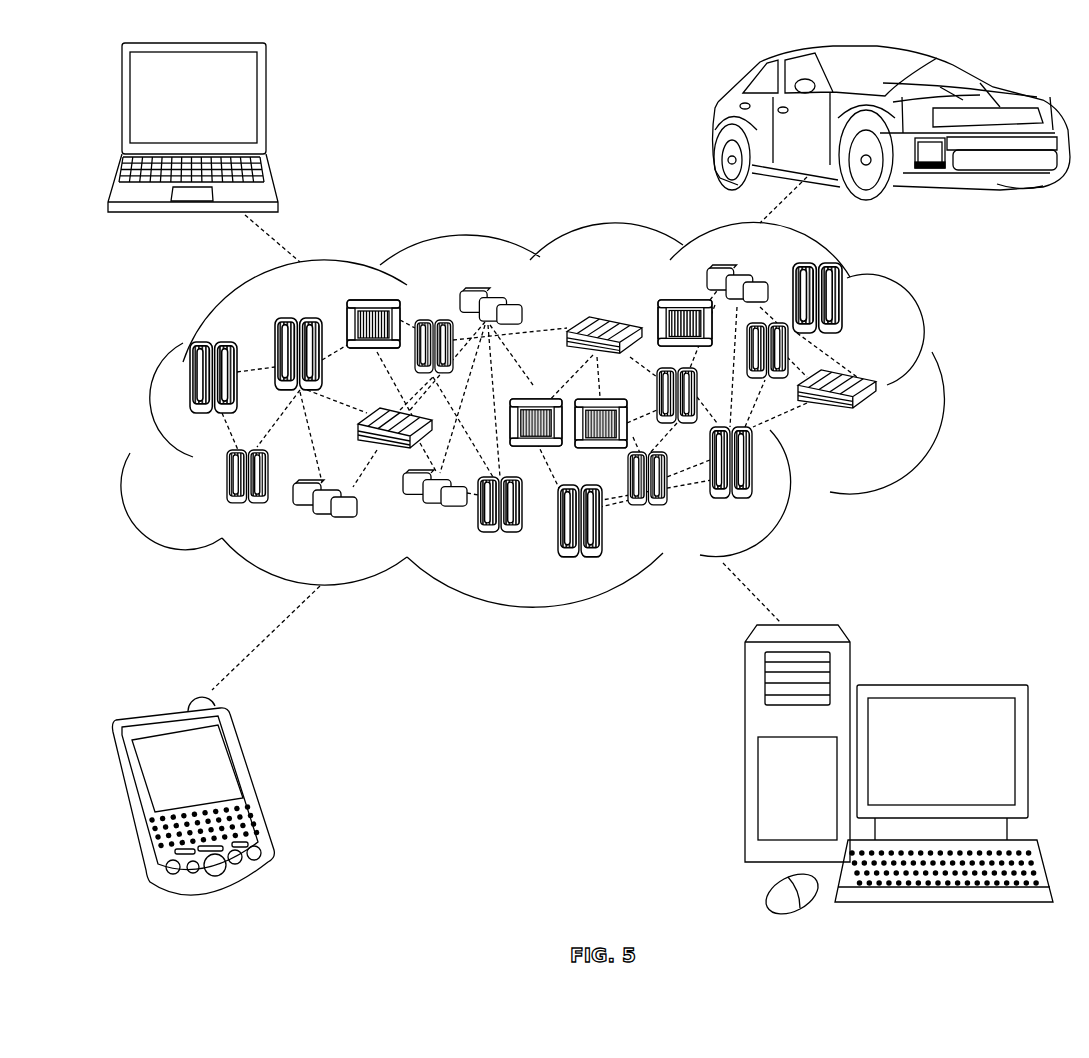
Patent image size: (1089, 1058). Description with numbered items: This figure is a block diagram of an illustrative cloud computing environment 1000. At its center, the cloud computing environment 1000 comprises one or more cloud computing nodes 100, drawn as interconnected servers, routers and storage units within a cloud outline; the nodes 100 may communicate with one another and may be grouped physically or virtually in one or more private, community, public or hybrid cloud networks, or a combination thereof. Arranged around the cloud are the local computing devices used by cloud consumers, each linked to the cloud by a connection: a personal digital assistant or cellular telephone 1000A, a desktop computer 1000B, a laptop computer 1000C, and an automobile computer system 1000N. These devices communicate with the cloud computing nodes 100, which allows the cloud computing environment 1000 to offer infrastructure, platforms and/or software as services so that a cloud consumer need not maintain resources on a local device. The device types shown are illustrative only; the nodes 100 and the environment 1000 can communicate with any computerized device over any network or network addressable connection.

The cloud computing environment 1000 is at (940, 393).
The cloud computing nodes 100 is at (877, 418).
The personal digital assistant (PDA) or cellular telephone 1000A is at (254, 785).
The desktop computer 1000B is at (938, 686).
The laptop computer 1000C is at (266, 108).
The automobile computer system 1000N is at (713, 126).